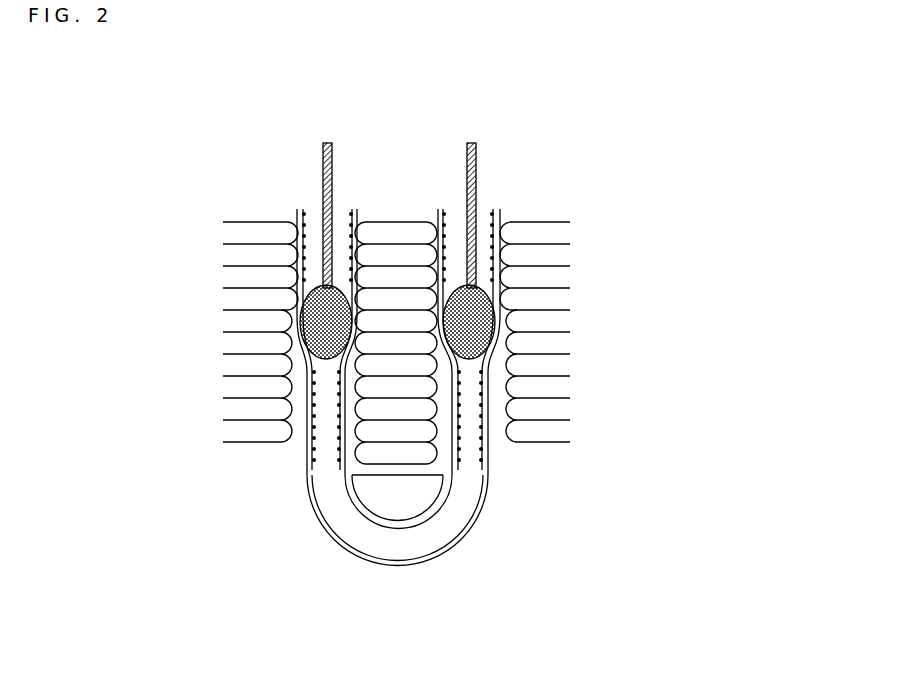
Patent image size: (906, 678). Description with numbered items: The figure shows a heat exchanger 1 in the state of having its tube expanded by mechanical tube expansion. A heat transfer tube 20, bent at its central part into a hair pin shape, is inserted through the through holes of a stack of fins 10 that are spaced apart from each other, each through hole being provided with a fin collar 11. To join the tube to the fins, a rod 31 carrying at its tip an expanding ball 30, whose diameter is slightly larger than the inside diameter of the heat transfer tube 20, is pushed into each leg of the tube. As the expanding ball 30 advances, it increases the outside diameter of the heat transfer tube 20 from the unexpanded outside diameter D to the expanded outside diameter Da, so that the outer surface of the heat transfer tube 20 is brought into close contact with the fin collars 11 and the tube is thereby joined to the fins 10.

The heat exchanger 1 is at (410, 205).
The fin 10 is at (552, 222).
The fin collar 11 is at (500, 228).
The heat transfer tube 20 is at (462, 537).
The expanding ball 30 is at (463, 342).
The rod 31 is at (477, 168).
The unexpanded outside diameter D is at (339, 478).
The expanded outside diameter Da is at (350, 219).